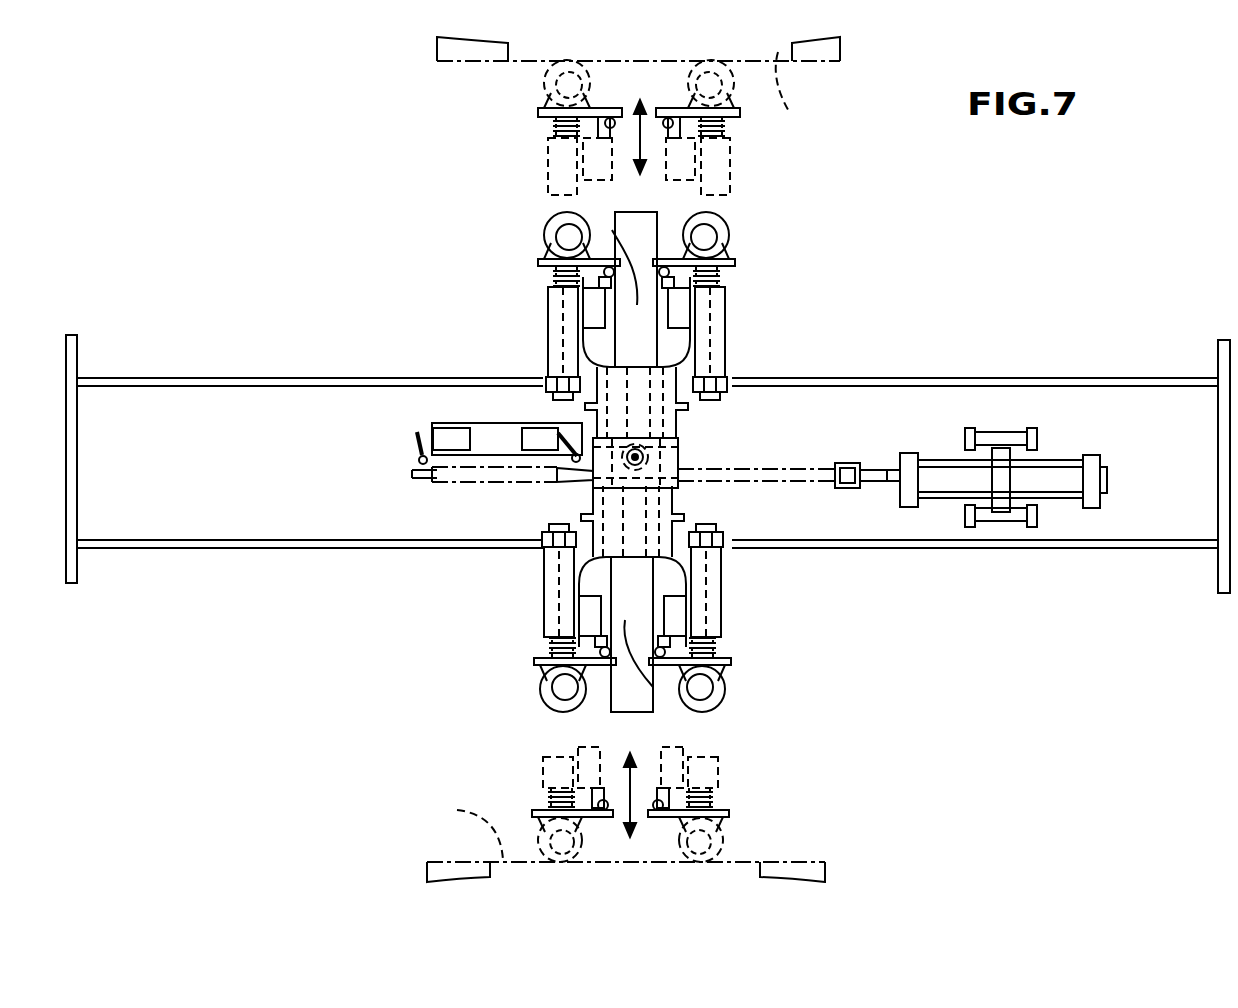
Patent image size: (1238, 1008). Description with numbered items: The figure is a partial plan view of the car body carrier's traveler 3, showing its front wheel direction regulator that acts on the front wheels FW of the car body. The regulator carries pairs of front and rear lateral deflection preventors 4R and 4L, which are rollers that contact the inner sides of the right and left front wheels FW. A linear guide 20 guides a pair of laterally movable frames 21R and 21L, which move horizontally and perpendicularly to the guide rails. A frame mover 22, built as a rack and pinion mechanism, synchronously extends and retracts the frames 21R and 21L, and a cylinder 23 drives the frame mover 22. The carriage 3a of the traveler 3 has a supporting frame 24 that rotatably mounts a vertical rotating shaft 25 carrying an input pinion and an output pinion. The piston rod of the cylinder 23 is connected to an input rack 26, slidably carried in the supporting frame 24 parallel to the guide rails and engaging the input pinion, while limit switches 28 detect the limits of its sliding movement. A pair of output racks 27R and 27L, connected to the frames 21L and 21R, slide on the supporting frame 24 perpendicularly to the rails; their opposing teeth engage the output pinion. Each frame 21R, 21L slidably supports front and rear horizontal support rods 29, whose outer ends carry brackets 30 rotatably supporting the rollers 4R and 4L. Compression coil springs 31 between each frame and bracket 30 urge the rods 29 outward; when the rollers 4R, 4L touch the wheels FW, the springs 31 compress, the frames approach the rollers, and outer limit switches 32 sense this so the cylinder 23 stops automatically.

The traveler 3 is at (1096, 372).
The carriage 3a is at (962, 372).
The lateral deflection preventor 4L is at (700, 82).
The lateral deflection preventor 4R is at (543, 707).
The linear guide 20 is at (640, 222).
The laterally movable frame 21L is at (742, 347).
The laterally movable frame 21R is at (745, 574).
The frame mover 22 is at (692, 457).
The cylinder 23 is at (1073, 482).
The supporting frame 24 is at (587, 468).
The vertical rotating shaft 25 is at (647, 457).
The input rack 26 is at (457, 477).
The output rack 27L is at (653, 687).
The output rack 27R is at (612, 232).
The limit switches 28 is at (540, 436).
The horizontal support rod 29 is at (560, 342).
The bracket 30 is at (538, 263).
The compression coil spring 31 is at (553, 278).
The outer limit switches 32 is at (592, 305).
The front wheels FW is at (630, 459).